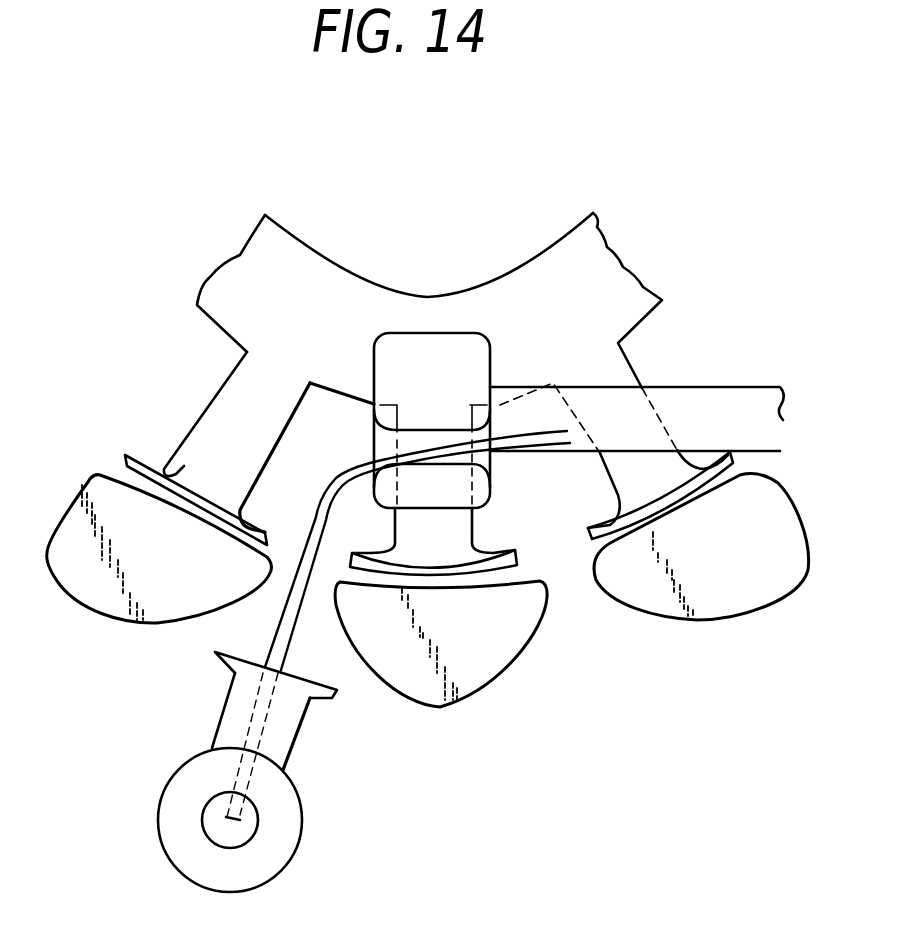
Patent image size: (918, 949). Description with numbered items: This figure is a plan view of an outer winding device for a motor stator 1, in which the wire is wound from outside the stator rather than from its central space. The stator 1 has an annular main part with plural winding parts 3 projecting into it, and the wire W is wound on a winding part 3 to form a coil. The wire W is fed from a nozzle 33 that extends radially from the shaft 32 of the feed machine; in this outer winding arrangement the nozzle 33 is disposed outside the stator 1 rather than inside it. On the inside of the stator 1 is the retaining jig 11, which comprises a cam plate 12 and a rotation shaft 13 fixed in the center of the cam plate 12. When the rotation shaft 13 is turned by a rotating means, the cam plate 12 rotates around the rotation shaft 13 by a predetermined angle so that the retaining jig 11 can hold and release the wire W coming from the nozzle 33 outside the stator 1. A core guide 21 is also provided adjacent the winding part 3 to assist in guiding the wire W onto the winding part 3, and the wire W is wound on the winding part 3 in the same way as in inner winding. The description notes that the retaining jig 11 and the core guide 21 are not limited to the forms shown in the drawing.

The motor stator 1 is at (648, 322).
The winding part 3 is at (207, 448).
The retaining jig 11 is at (405, 333).
The cam plate 12 is at (455, 353).
The rotation shaft 13 is at (747, 417).
The core guide 21 is at (677, 617).
The wire W is at (287, 607).
The nozzle 33 is at (287, 710).
The shaft 32 is at (287, 863).